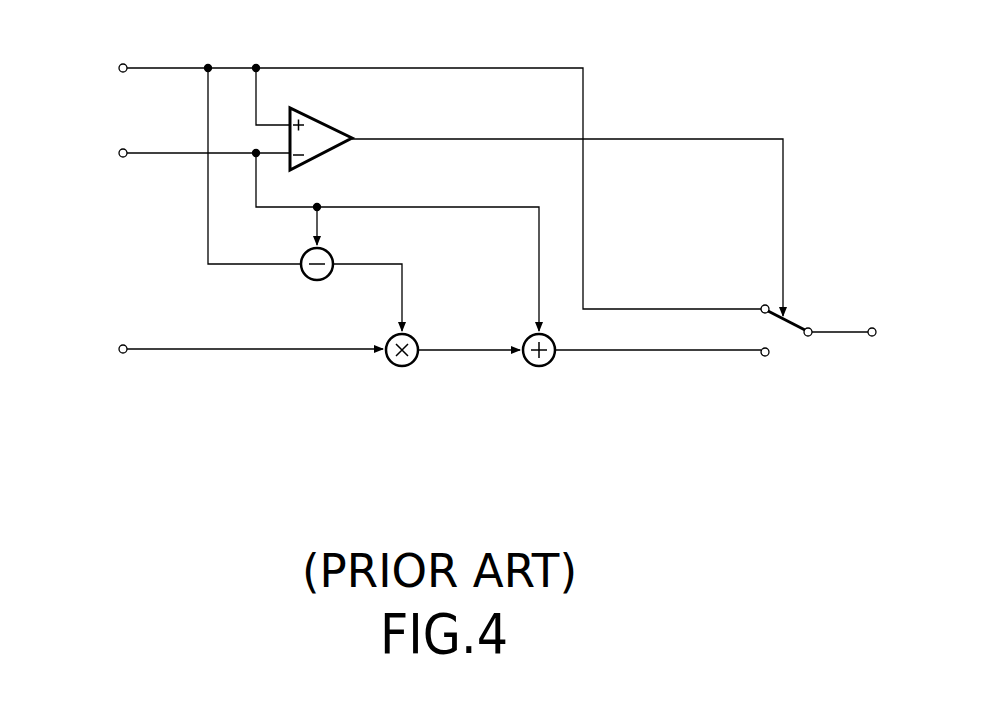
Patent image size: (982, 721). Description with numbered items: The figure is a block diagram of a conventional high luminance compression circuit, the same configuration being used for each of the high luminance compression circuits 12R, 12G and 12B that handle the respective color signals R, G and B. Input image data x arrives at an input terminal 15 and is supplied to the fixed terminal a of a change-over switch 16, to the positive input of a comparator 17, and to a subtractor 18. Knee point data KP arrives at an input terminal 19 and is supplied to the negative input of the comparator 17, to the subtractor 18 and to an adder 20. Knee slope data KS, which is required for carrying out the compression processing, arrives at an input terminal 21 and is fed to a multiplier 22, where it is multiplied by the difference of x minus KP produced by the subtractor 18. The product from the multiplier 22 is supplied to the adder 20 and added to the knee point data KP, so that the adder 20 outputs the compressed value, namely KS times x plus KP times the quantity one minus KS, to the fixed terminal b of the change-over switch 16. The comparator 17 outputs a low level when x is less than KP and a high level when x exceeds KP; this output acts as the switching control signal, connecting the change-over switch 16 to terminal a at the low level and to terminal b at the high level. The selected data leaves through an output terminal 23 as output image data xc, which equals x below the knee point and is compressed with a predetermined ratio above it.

The high luminance compression circuit 12R is at (481, 260).
The high luminance compression circuit 12G is at (440, 503).
The high luminance compression circuit 12B is at (505, 503).
The input terminal 15 is at (128, 62).
The change-over switch 16 is at (821, 380).
The comparator 17 is at (327, 156).
The subtractor 18 is at (313, 283).
The input terminal 19 is at (128, 148).
The adder 20 is at (540, 366).
The input terminal 21 is at (128, 344).
The multiplier 22 is at (402, 365).
The output terminal 23 is at (872, 338).